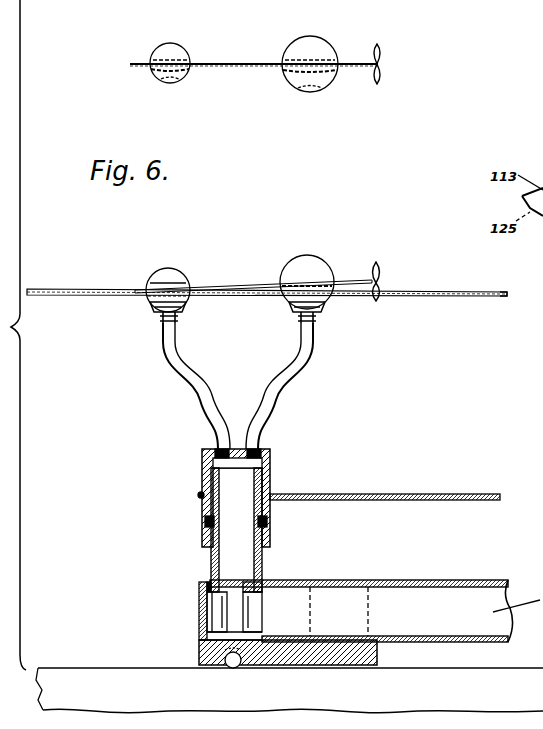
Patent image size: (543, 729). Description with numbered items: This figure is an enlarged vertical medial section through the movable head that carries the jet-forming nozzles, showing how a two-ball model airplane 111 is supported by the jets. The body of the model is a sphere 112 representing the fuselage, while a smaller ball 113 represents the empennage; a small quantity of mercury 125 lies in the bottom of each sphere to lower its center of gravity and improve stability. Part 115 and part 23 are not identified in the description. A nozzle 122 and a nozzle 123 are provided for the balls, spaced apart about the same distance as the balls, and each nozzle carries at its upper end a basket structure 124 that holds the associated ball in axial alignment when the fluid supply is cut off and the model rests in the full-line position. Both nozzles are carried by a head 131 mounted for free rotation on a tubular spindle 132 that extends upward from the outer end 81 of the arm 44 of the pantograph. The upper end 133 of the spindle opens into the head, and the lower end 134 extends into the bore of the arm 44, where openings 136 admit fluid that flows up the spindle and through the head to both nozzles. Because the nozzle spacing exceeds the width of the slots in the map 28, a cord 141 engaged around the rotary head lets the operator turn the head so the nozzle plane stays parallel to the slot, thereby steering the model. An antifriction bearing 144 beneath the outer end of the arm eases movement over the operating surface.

The model airplane 111 is at (330, 37).
The sphere 112 is at (306, 45).
The smaller ball 113 is at (167, 50).
The connecting rod 115 is at (228, 286).
The nozzle 122 is at (310, 337).
The nozzle 123 is at (168, 343).
The basket structure 124 is at (160, 307).
The mercury 125 is at (162, 82).
The head 131 is at (206, 482).
The tubular spindle 132 is at (262, 564).
The upper end of the tubular spindle 133 is at (206, 514).
The lower end of the spindle 134 is at (235, 613).
The openings 136 is at (246, 610).
The cord 141 is at (431, 494).
The antifriction bearing 144 is at (233, 667).
The map 28 is at (467, 291).
The wing tip 23 is at (497, 296).
The outer end of the arm 81 is at (437, 581).
The arm 44 is at (499, 580).